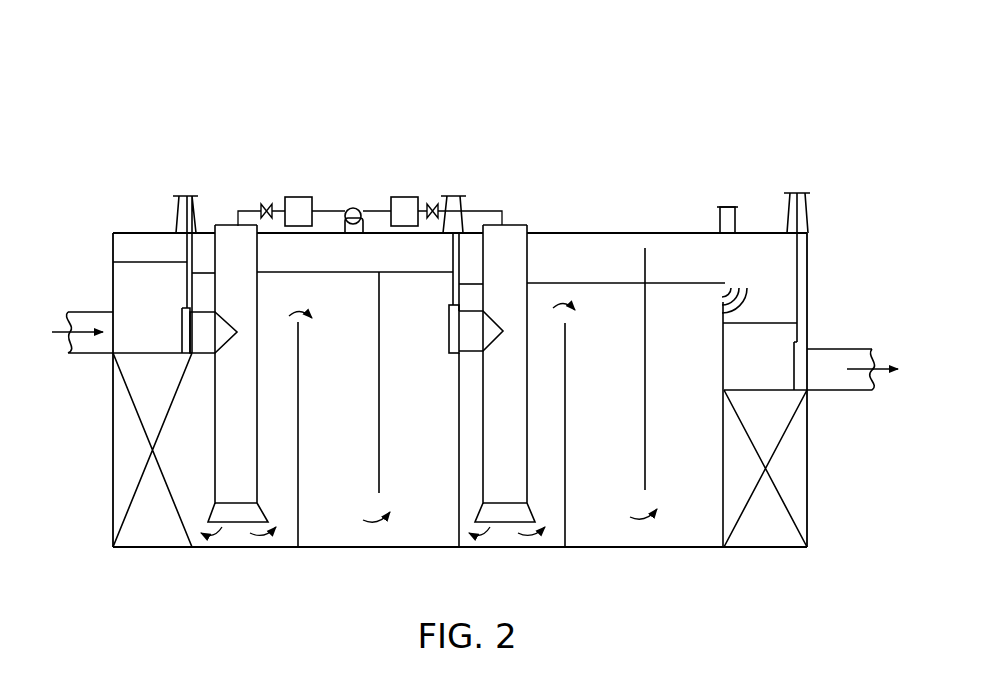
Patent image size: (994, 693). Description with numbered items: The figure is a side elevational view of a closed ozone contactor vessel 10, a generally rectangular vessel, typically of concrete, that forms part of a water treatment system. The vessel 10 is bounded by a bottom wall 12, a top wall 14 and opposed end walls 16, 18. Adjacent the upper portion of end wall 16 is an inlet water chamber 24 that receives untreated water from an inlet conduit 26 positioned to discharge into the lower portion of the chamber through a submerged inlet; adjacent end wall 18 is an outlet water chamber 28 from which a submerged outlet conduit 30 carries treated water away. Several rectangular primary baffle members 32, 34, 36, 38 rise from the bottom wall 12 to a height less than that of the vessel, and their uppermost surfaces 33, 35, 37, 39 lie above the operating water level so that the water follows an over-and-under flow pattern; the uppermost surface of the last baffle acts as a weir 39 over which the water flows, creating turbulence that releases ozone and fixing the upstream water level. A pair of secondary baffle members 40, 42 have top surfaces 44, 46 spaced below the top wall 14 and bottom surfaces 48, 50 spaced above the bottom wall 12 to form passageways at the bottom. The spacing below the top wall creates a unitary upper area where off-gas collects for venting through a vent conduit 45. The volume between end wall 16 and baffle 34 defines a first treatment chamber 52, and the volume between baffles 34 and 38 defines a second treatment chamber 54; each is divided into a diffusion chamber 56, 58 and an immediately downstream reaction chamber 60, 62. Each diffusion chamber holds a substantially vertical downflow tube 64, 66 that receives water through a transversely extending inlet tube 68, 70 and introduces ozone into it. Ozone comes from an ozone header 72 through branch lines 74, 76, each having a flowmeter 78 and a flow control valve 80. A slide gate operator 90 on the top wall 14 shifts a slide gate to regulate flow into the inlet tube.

The closed ozone contactor vessel 10 is at (588, 145).
The bottom wall 12 is at (648, 547).
The top wall 14 is at (660, 233).
The end wall 16 is at (190, 498).
The end wall 18 is at (810, 248).
The inlet water chamber 24 is at (113, 272).
The inlet conduit 26 is at (82, 354).
The outlet water chamber 28 is at (796, 333).
The outlet conduit 30 is at (843, 391).
The primary baffle member 32 is at (299, 412).
The uppermost surface 33 is at (298, 324).
The primary baffle member 34 is at (458, 459).
The uppermost surface 35 is at (453, 253).
The primary baffle member 36 is at (566, 474).
The uppermost surface 37 is at (566, 324).
The primary baffle member 38 is at (725, 480).
The weir 39 is at (722, 302).
The secondary baffle member 40 is at (380, 409).
The secondary baffle member 42 is at (646, 388).
The top surface 44 is at (377, 254).
The vent conduit 45 is at (728, 207).
The top surface 46 is at (648, 250).
The bottom surface 48 is at (378, 490).
The bottom surface 50 is at (647, 490).
The first treatment chamber 52 is at (388, 540).
The second treatment chamber 54 is at (604, 515).
The diffusion chamber 56 is at (292, 548).
The diffusion chamber 58 is at (617, 287).
The reaction chamber 60 is at (436, 498).
The reaction chamber 62 is at (703, 505).
The downflow tube 64 is at (260, 282).
The downflow tube 66 is at (528, 260).
The inlet tube 68 is at (202, 352).
The inlet tube 70 is at (470, 352).
The ozone header 72 is at (352, 208).
The branch line 74 is at (244, 212).
The branch line 76 is at (503, 212).
The flowmeter 78 is at (292, 197).
The flow control valve 80 is at (264, 204).
The slide gate operator 90 is at (177, 196).